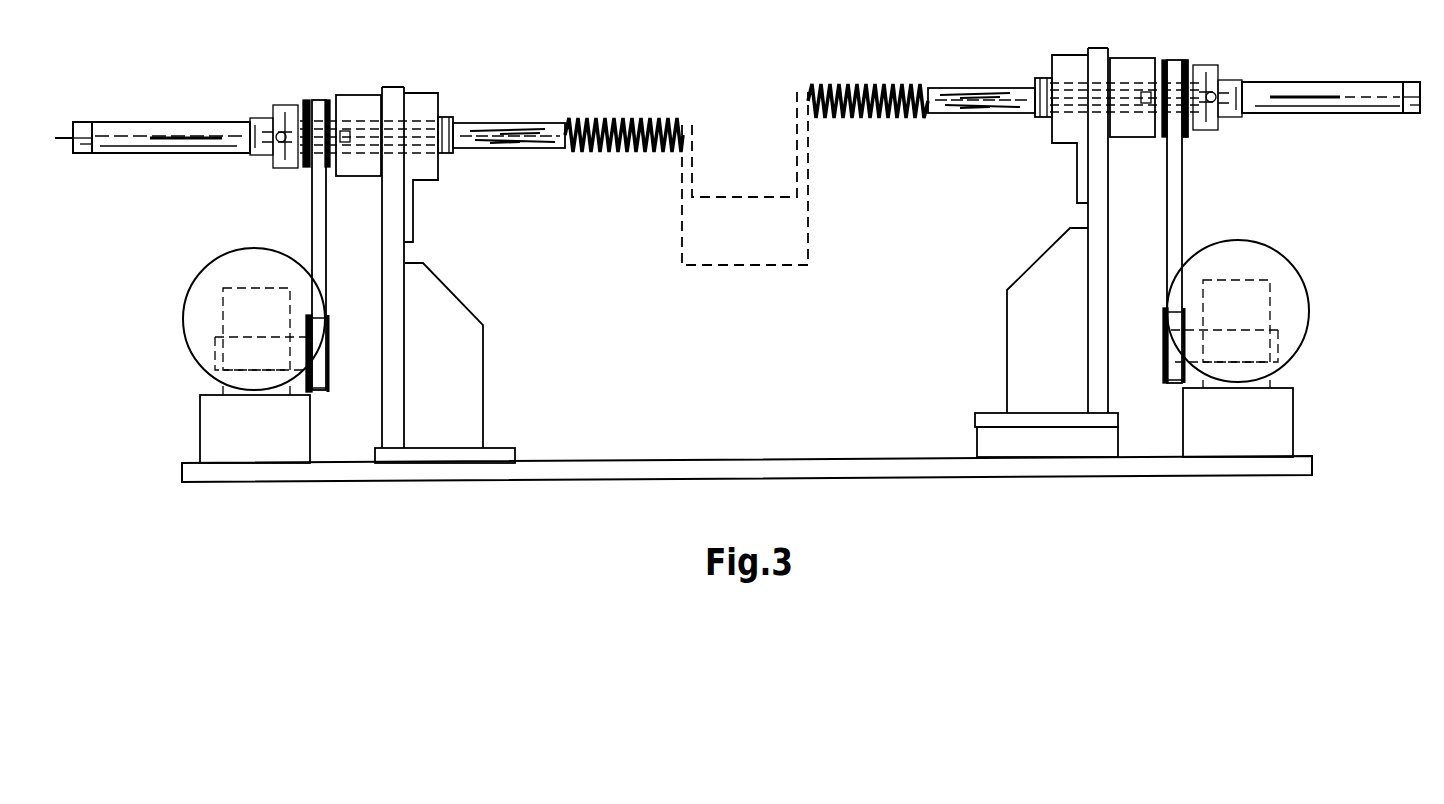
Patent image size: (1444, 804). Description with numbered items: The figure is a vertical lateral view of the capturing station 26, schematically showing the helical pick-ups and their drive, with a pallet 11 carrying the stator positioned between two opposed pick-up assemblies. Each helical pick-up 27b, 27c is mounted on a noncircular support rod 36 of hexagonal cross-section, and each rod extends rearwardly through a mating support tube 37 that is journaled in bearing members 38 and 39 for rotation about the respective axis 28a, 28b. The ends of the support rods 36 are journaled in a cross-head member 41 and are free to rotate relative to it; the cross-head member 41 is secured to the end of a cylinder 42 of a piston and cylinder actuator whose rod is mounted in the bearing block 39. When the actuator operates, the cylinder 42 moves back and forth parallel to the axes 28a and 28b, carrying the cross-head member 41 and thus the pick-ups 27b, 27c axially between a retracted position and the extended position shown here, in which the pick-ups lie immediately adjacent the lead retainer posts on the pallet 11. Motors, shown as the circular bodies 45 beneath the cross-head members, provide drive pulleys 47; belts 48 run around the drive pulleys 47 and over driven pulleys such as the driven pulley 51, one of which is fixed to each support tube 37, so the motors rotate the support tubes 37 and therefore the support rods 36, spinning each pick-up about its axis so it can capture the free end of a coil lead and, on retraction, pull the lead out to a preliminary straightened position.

The capturing station 26 is at (586, 507).
The axis 28a is at (1422, 97).
The axis 28b is at (68, 128).
The cylinder 42 is at (160, 125).
The cross-head member 41 is at (284, 107).
The bearing member 39 is at (350, 100).
The bearing member 38 is at (420, 100).
The support tube 37 is at (447, 118).
The support rod 36 is at (548, 125).
The helical pick-up 27b is at (618, 152).
The helical pick-up 27c is at (852, 112).
The pallet 11 is at (800, 240).
The belt 48 is at (316, 222).
The motor 45 is at (200, 325).
The drive pulley 47 is at (330, 382).
The driven pulley 51 is at (1186, 65).